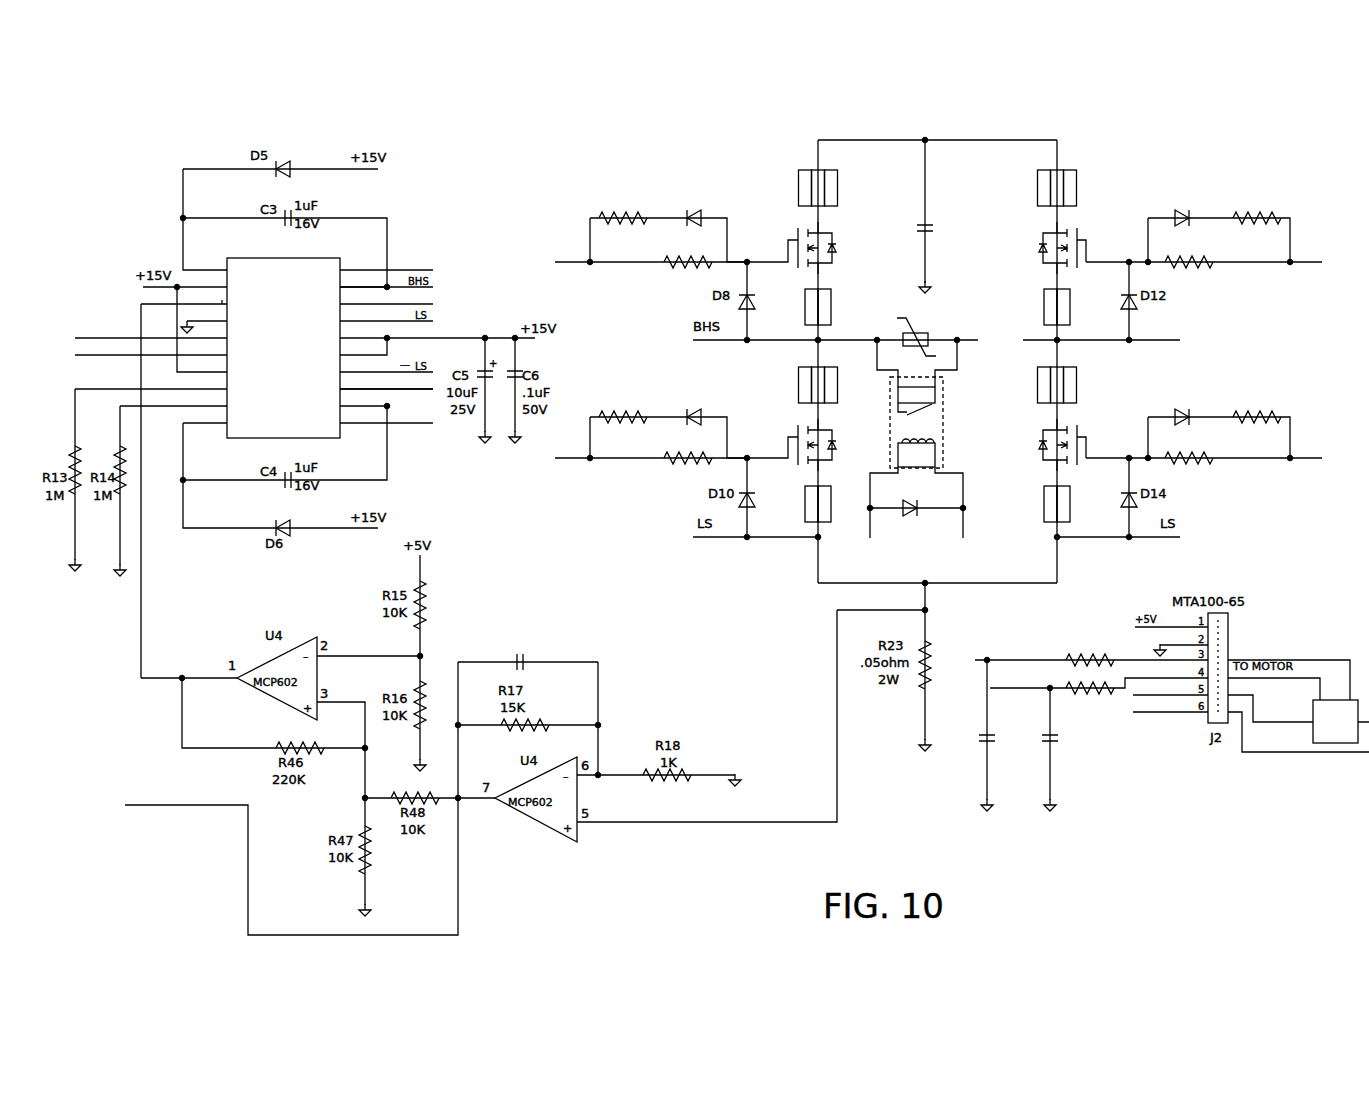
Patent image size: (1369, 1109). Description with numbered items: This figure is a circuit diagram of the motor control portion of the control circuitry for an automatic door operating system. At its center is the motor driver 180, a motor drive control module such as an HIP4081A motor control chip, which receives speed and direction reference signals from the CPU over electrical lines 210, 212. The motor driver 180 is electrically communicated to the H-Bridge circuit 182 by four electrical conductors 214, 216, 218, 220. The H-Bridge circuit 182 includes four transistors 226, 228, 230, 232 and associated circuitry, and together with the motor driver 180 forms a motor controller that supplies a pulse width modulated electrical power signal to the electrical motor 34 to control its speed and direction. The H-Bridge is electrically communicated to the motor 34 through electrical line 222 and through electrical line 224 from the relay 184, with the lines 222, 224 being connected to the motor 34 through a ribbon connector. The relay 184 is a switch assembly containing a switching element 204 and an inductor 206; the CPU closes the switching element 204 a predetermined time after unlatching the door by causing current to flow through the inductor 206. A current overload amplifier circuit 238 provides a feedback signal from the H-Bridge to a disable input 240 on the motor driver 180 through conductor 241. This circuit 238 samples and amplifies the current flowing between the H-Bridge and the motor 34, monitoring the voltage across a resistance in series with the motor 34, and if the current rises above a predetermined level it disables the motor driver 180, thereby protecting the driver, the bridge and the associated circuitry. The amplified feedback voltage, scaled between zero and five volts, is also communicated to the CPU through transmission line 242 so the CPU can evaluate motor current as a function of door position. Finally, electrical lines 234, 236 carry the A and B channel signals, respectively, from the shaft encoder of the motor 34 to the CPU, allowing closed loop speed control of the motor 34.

The electrical motor 34 is at (1351, 736).
The motor driver 180 is at (293, 272).
The H-Bridge circuit 182 is at (1092, 138).
The relay 184 is at (934, 446).
The switching element 204 is at (920, 411).
The inductor 206 is at (935, 442).
The electrical line 210 is at (82, 357).
The electrical line 212 is at (80, 337).
The electrical conductor 214 is at (395, 268).
The electrical conductor 216 is at (437, 306).
The electrical conductor 218 is at (395, 428).
The electrical conductor 220 is at (372, 392).
The electrical line 222 is at (970, 340).
The electrical line 224 is at (1032, 341).
The transistor 226 is at (783, 208).
The transistor 228 is at (772, 405).
The transistor 230 is at (1103, 207).
The transistor 232 is at (1105, 410).
The electrical line 234 is at (1052, 658).
The electrical line 236 is at (1058, 690).
The current overload amplifier circuit 238 is at (532, 630).
The disable input 240 is at (222, 302).
The conductor 241 is at (142, 306).
The transmission line 242 is at (178, 807).